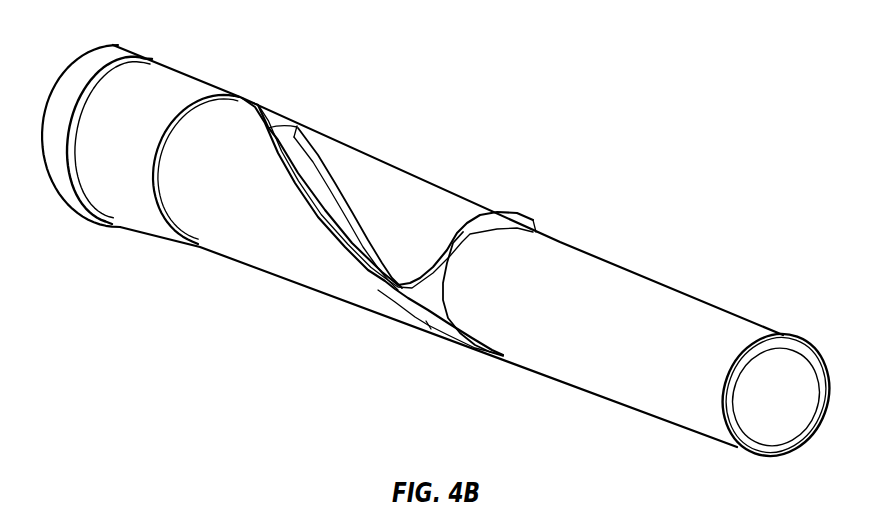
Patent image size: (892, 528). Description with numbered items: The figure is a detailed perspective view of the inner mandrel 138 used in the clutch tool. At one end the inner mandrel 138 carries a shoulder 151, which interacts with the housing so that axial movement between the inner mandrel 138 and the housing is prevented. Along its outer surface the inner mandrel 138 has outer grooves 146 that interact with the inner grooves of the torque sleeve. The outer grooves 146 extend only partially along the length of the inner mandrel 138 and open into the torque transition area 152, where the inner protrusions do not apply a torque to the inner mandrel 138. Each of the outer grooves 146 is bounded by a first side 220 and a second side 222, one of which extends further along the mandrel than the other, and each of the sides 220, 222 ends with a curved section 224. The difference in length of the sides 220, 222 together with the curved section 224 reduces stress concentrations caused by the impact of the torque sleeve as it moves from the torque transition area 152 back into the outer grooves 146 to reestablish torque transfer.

The inner mandrel 138 is at (423, 123).
The outer grooves 146 is at (315, 178).
The shoulder 151 is at (137, 56).
The torque transition area 152 is at (653, 310).
The first side 220 is at (337, 236).
The second side 222 is at (387, 272).
The curved section 224 is at (409, 280).